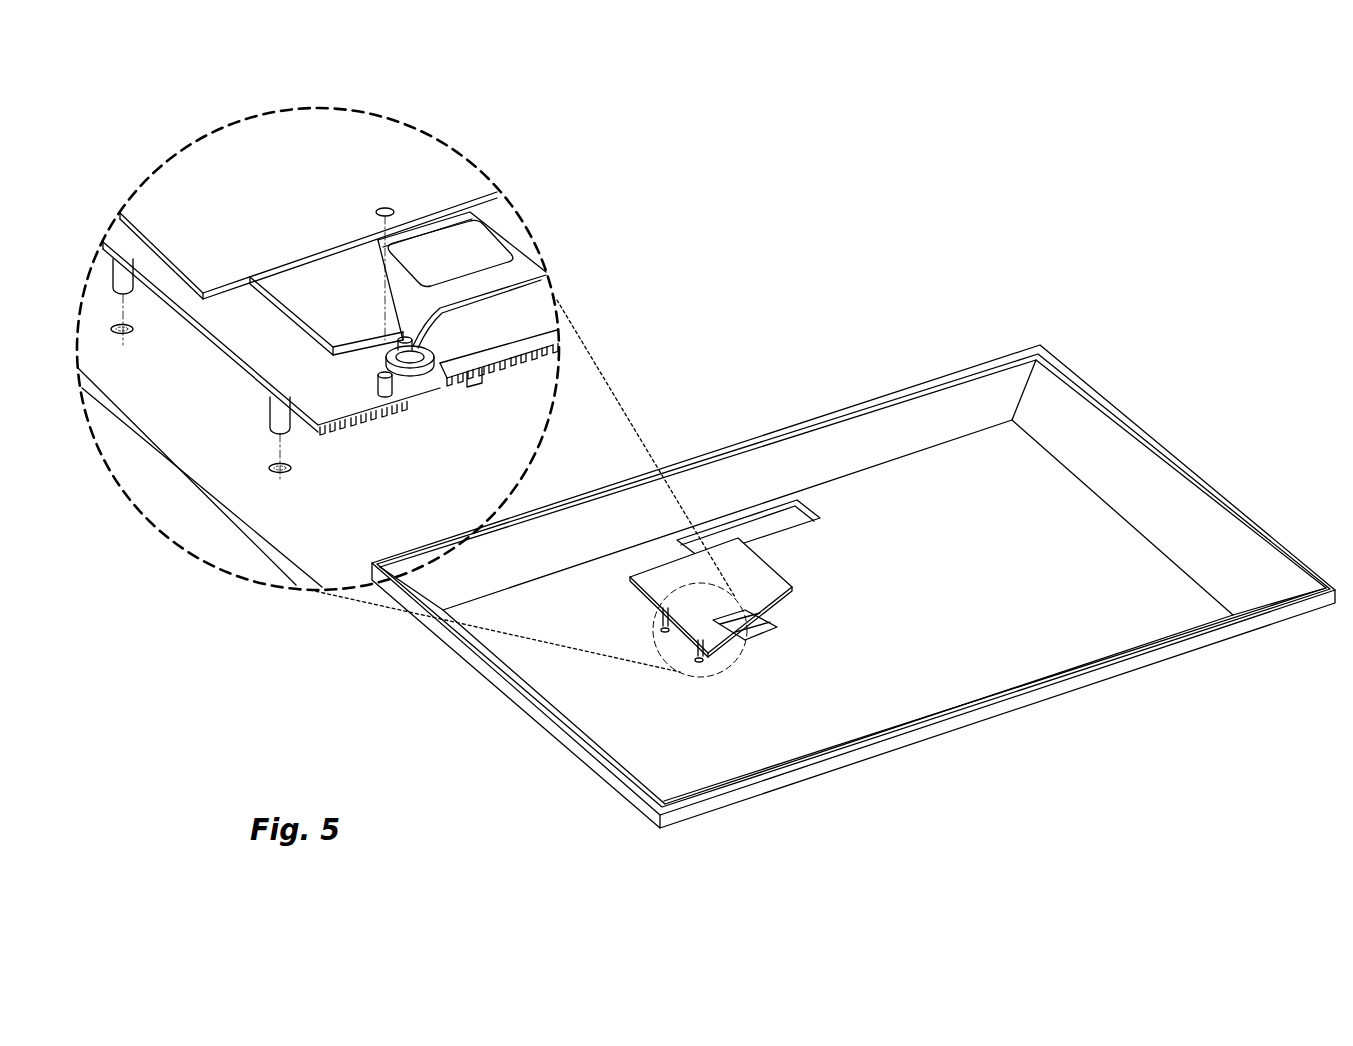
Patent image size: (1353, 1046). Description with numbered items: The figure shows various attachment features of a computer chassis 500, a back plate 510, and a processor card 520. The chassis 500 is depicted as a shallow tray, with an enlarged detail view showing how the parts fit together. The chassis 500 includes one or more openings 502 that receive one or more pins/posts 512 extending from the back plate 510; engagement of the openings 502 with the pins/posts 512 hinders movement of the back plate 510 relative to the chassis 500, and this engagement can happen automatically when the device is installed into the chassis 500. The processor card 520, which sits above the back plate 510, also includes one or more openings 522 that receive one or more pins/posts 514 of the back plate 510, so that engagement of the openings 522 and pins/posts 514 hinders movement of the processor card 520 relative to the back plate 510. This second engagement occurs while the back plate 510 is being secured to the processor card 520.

The computer chassis 500 is at (817, 413).
The openings 502 is at (267, 468).
The back plate 510 is at (535, 307).
The pins/posts 512 is at (268, 413).
The pins/posts 514 is at (394, 388).
The processor card 520 is at (188, 168).
The openings 522 is at (383, 207).